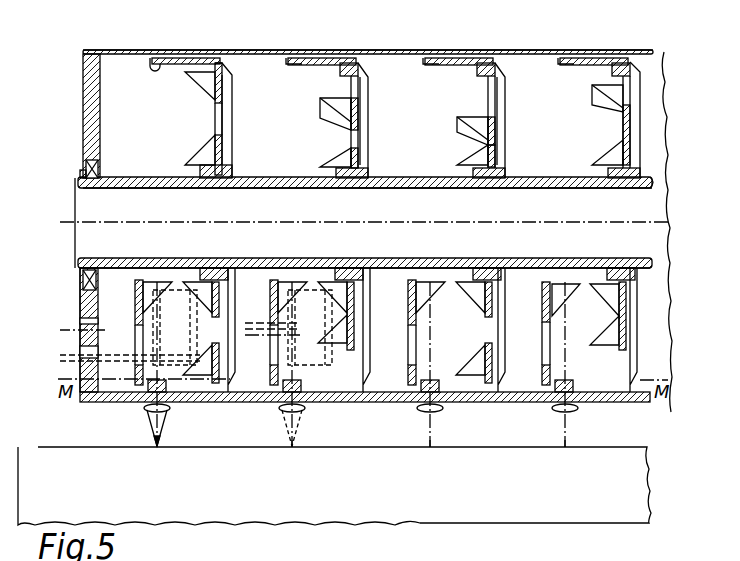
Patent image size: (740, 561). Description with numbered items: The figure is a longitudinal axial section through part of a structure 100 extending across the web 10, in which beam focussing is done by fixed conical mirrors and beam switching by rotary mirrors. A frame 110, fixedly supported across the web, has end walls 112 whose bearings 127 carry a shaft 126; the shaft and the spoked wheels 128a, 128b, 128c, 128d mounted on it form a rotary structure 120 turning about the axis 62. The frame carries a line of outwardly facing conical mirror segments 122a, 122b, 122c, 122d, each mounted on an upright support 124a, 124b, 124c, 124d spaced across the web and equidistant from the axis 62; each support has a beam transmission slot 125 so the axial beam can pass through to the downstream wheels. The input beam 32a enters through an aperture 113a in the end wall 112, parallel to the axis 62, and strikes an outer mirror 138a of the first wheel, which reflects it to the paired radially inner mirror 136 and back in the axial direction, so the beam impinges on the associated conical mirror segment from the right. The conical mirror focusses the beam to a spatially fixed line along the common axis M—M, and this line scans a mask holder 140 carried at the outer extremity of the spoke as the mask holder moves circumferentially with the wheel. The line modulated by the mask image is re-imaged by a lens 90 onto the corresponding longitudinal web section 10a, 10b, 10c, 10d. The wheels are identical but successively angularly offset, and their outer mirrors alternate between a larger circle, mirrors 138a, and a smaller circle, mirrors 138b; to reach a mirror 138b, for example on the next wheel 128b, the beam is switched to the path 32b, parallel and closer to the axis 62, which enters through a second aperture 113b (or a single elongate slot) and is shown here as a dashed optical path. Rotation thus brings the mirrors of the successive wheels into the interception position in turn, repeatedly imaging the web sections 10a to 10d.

The web 10 is at (626, 450).
The web section 10a is at (159, 459).
The web section 10b is at (294, 461).
The web section 10c is at (431, 461).
The web section 10d is at (567, 461).
The beam 32a is at (86, 357).
The beam path 32b is at (86, 322).
The axis of the rotary structure 62 is at (75, 226).
The lens 90 is at (166, 409).
The structure 100 is at (340, 45).
The frame 110 is at (146, 50).
The end wall 112 is at (88, 92).
The aperture 113a is at (90, 356).
The second aperture 113b is at (82, 296).
The rotary structure 120 is at (362, 211).
The conical mirror segment 122a is at (160, 282).
The conical mirror segment 122b is at (298, 282).
The conical mirror segment 122c is at (440, 282).
The conical mirror segment 122d is at (580, 284).
The upright support 124a is at (138, 282).
The upright support 124b is at (273, 282).
The upright support 124c is at (412, 282).
The upright support 124d is at (546, 284).
The beam transmission slot 125 is at (140, 335).
The shaft 126 is at (650, 188).
The bearing 127 is at (86, 166).
The wheel 128a is at (232, 75).
The wheel 128b is at (370, 76).
The wheel 128c is at (505, 76).
The wheel 128d is at (636, 72).
The radially inner mirror 136 is at (215, 282).
The outer mirror 138a is at (232, 378).
The outer mirror 138b is at (368, 378).
The mask holder 140 is at (156, 62).